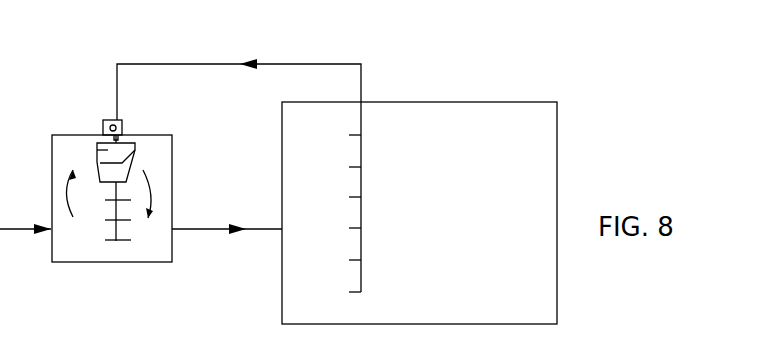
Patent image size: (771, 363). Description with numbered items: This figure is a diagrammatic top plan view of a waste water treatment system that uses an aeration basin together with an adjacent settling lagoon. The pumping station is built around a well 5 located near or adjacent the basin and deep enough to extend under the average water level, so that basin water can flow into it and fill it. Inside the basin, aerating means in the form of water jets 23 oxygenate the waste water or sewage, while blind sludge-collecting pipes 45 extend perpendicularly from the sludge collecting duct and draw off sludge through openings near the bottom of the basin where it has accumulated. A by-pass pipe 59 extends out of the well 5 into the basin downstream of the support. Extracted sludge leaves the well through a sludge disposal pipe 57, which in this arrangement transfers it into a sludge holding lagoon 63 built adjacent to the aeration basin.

The well 5 is at (103, 128).
The water jet 23 is at (135, 147).
The blind sludge-collecting pipe 45 is at (98, 145).
The sludge disposal pipe 57 is at (195, 63).
The by-pass pipe 59 is at (122, 138).
The sludge holding lagoon 63 is at (452, 120).